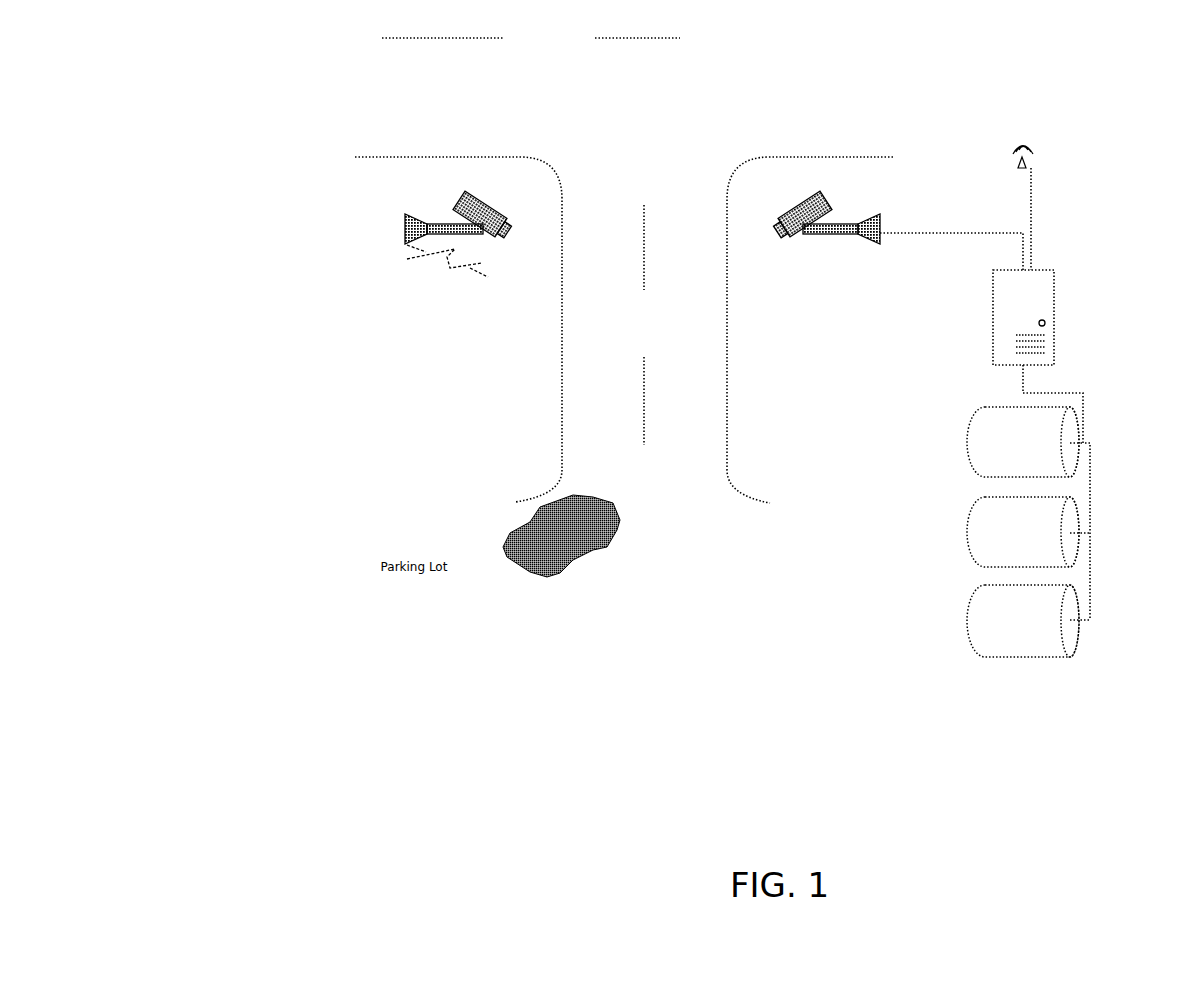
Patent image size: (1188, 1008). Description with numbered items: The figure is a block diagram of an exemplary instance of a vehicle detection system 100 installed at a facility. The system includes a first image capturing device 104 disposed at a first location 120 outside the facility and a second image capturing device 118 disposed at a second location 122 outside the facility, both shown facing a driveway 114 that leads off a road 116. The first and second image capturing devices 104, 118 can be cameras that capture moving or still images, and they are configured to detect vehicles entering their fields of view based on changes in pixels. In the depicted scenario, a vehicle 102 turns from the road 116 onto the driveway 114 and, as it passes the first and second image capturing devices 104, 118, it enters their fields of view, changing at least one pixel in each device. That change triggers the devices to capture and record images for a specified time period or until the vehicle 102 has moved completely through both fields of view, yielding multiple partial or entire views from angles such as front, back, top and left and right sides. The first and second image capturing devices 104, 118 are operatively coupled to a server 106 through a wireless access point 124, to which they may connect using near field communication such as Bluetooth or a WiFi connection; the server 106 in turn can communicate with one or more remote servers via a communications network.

The vehicle detection system 100 is at (282, 348).
The vehicle 102 is at (580, 562).
The first image capturing device 104 is at (879, 225).
The server 106 is at (1055, 305).
The driveway 114 is at (594, 221).
The road 116 is at (636, 82).
The second image capturing device 118 is at (405, 228).
The first location 120 is at (782, 297).
The second location 122 is at (462, 295).
The wireless access point 124 is at (1032, 148).